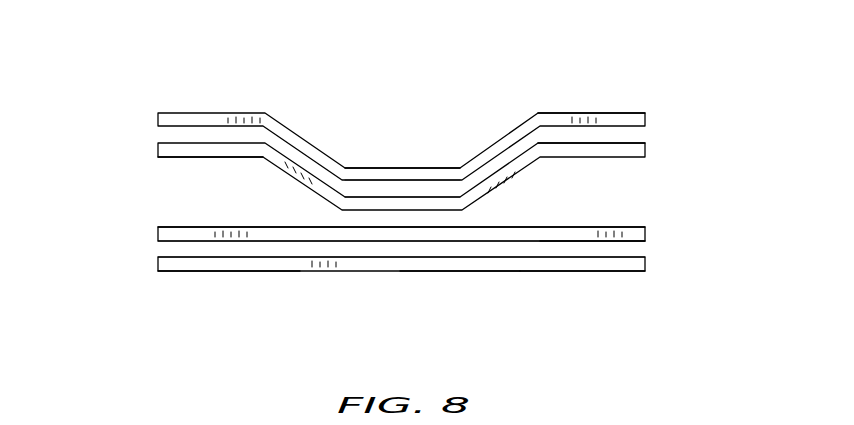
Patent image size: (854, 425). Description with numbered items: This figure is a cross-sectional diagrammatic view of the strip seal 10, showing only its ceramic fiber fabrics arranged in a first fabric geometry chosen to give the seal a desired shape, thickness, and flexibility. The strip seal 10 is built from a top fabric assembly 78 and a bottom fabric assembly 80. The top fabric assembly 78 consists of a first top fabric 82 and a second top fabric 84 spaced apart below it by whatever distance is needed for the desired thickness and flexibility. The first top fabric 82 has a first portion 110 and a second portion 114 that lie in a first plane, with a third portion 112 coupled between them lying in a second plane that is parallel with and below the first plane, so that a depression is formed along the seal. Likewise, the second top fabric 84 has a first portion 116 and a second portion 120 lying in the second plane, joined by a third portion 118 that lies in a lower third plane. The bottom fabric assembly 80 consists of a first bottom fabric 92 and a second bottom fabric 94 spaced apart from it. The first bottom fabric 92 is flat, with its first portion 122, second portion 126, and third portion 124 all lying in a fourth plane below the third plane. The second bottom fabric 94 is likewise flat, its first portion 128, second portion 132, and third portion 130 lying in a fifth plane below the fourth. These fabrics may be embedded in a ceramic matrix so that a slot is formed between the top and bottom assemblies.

The strip seal 10 is at (259, 70).
The top fabric assembly 78 is at (135, 136).
The bottom fabric assembly 80 is at (135, 249).
The first top fabric 82 is at (647, 120).
The second top fabric 84 is at (647, 150).
The first bottom fabric 92 is at (647, 235).
The second bottom fabric 94 is at (647, 265).
The first portion of first top fabric 110 is at (212, 110).
The third portion of first top fabric 112 is at (373, 167).
The second portion of first top fabric 114 is at (552, 113).
The first portion of second top fabric 116 is at (182, 157).
The third portion of second top fabric 118 is at (390, 197).
The second portion of second top fabric 120 is at (598, 143).
The first portion of first bottom fabric 122 is at (225, 227).
The third portion of first bottom fabric 124 is at (413, 242).
The second portion of first bottom fabric 126 is at (602, 242).
The first portion of second bottom fabric 128 is at (247, 272).
The third portion of second bottom fabric 130 is at (445, 272).
The second portion of second bottom fabric 132 is at (563, 272).